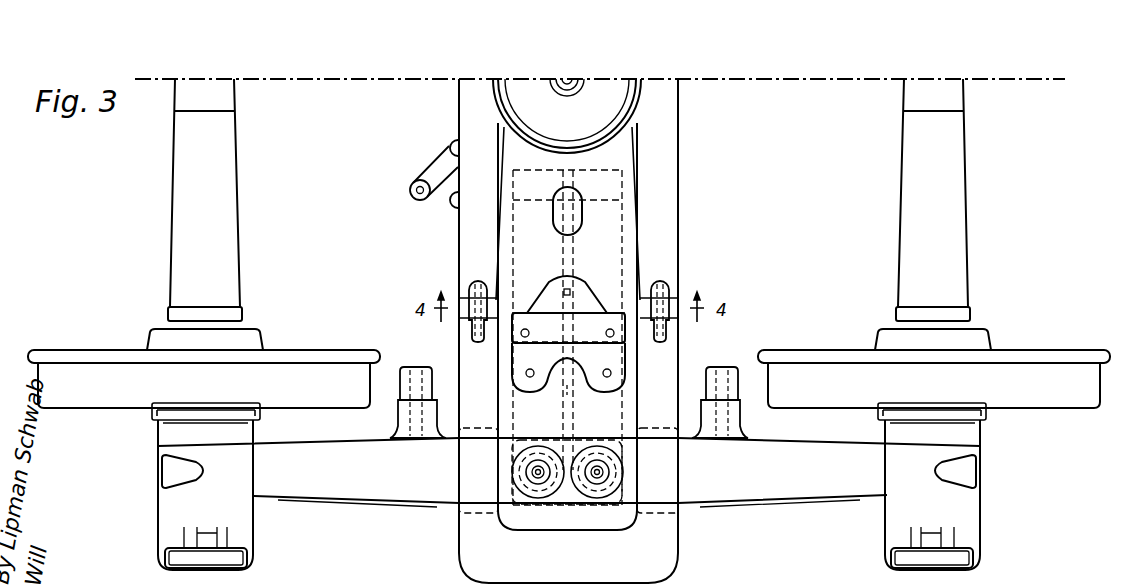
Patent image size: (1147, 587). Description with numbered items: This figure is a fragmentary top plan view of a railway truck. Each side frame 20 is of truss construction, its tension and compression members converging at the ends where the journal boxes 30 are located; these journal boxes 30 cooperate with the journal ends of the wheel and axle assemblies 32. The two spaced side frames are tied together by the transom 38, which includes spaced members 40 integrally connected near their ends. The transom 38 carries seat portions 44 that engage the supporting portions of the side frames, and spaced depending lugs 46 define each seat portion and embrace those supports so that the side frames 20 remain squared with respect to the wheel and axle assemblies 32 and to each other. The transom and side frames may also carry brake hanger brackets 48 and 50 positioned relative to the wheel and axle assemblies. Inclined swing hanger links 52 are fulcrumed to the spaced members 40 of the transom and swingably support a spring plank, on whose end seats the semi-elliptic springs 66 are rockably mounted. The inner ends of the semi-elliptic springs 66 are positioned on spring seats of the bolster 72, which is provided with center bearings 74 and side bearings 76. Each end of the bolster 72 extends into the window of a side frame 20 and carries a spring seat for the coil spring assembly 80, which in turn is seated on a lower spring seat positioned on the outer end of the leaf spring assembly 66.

The side frame 20 is at (758, 497).
The journal boxes 30 is at (168, 512).
The wheel and axle assemblies 32 is at (98, 362).
The transom 38 is at (677, 181).
The spaced members 40 is at (665, 219).
The seat portions 44 is at (667, 487).
The depending lugs 46 is at (476, 427).
The brake hanger bracket 48 is at (417, 186).
The brake hanger bracket 50 is at (414, 366).
The swing hanger links 52 is at (473, 278).
The semi-elliptic springs 66 is at (567, 390).
The bolster 72 is at (580, 224).
The center bearings 74 is at (608, 98).
The side bearings 76 is at (568, 334).
The coil spring assembly 80 is at (578, 512).